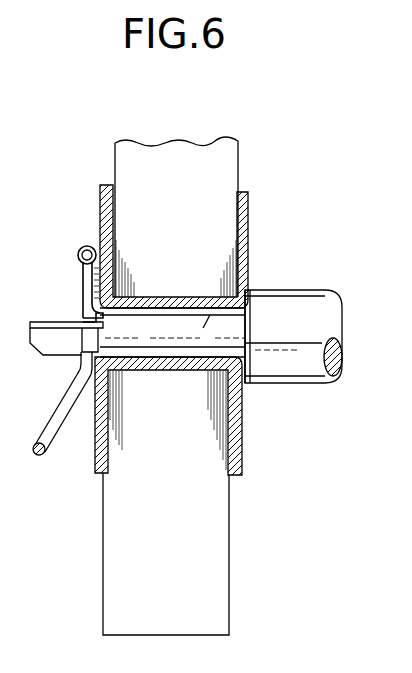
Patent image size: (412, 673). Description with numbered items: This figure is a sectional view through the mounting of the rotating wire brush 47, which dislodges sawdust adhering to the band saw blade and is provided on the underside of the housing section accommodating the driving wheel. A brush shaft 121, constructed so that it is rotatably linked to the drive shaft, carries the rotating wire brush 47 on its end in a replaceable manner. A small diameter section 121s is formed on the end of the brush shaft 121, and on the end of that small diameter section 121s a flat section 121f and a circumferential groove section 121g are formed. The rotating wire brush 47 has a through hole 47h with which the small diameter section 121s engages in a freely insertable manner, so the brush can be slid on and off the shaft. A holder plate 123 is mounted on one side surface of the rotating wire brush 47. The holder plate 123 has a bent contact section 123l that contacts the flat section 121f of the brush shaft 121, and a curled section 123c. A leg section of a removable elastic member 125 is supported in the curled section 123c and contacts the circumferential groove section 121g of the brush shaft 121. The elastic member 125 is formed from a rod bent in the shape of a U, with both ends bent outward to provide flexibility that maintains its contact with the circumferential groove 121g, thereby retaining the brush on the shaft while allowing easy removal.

The rotating wire brush 47 is at (217, 603).
The through hole 47h is at (167, 308).
The brush shaft 121 is at (283, 372).
The small diameter section 121s is at (234, 285).
The flat section 121f is at (52, 321).
The circumferential groove section 121g is at (80, 345).
The holder plate 123 is at (117, 270).
The curled section 123c is at (85, 246).
The bent contact section 123l is at (74, 316).
The removable elastic member 125 is at (57, 431).